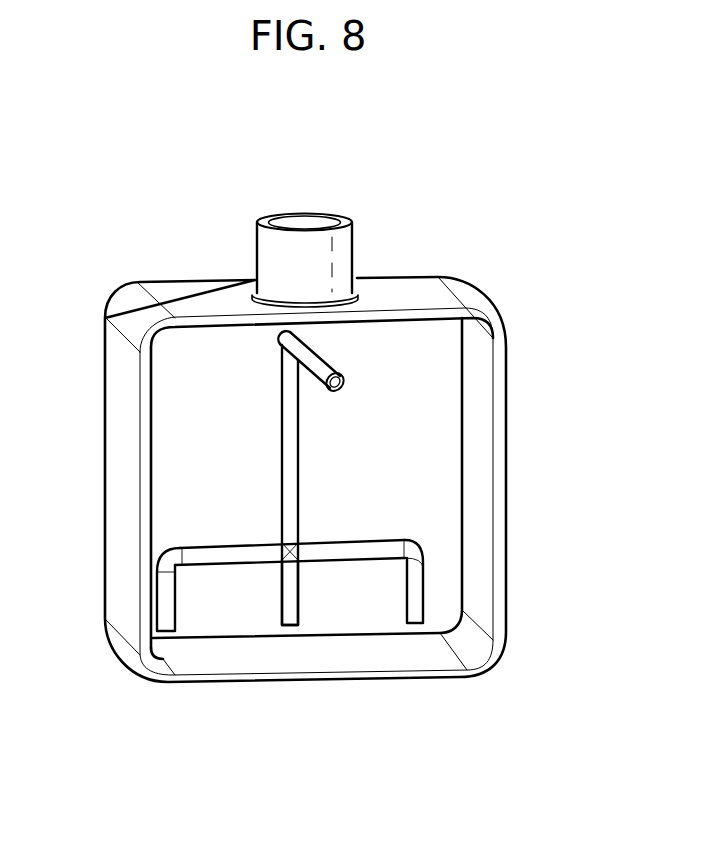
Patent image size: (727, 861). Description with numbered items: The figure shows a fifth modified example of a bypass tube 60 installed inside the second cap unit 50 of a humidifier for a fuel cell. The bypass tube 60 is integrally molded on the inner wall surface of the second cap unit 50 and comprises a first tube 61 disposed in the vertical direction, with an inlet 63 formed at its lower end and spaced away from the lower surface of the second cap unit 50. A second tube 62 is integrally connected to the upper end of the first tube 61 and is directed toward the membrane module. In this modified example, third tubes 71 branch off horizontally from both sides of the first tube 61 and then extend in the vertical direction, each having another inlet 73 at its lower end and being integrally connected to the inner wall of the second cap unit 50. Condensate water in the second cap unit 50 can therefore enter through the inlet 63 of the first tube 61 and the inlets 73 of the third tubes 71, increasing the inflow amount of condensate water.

The second cap unit 50 is at (507, 405).
The bypass tube 60 is at (310, 559).
The first tube 61 is at (299, 472).
The second tube 62 is at (322, 363).
The inlet 63 is at (283, 628).
The third tube 71 is at (223, 566).
The inlet 73 is at (166, 631).